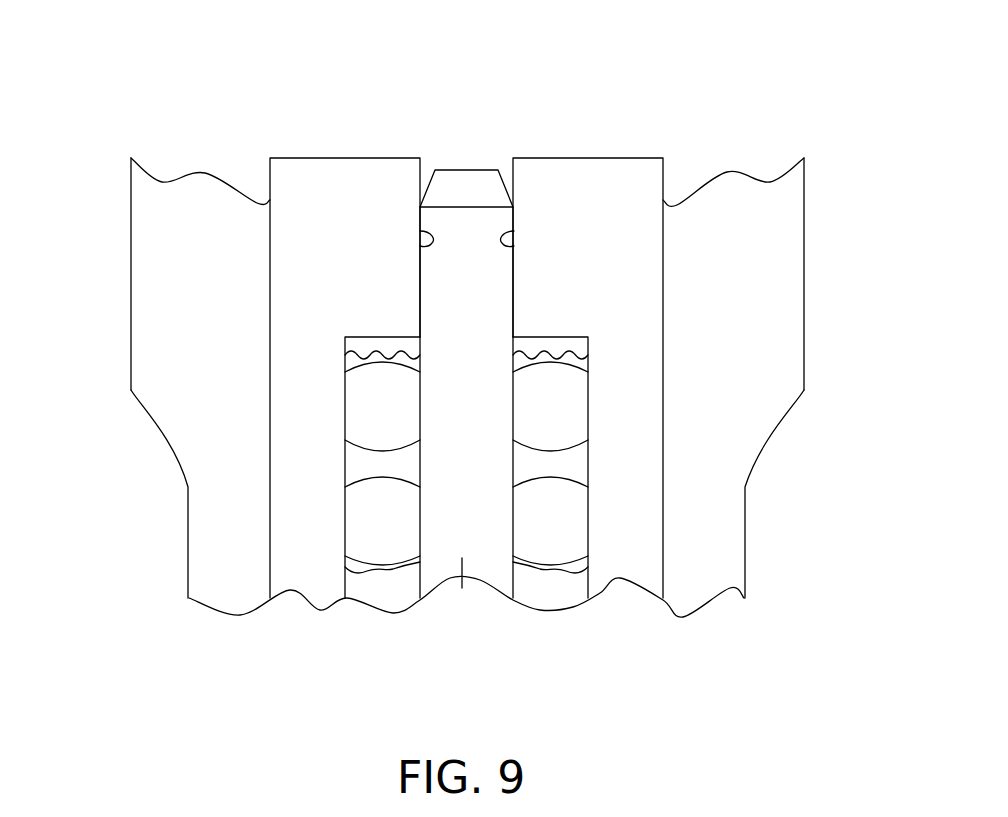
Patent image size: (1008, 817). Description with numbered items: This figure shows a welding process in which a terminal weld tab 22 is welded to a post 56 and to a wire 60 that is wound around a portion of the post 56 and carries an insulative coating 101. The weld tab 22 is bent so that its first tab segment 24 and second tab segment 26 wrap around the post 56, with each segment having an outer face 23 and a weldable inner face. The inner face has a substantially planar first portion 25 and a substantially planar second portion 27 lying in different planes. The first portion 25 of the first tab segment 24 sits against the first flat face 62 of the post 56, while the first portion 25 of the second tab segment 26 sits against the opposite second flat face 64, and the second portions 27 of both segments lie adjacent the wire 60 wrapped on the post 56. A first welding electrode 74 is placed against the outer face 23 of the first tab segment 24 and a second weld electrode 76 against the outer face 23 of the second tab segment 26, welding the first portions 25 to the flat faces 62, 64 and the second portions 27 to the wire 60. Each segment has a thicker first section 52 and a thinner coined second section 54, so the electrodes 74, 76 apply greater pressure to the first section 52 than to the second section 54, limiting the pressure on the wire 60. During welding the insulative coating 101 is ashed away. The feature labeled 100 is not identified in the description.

The terminal weld tab 22 is at (533, 156).
The first tab segment 24 is at (303, 142).
The second tab segment 26 is at (567, 156).
The first portion of the weld tab 52 is at (338, 198).
The outer face 23 is at (270, 255).
The substantially planar first portion 25 is at (420, 238).
The first flat face 62 is at (420, 262).
The second flat face 64 is at (513, 287).
The insulative coating 101 is at (345, 358).
The substantially planar second portion 27 is at (355, 462).
The first welding electrode 74 is at (207, 518).
The second weld electrode 76 is at (723, 505).
The second portion of the weld tab 54 is at (305, 535).
The wire 60 is at (380, 522).
The post 56 is at (462, 583).
The resilient member 100 is at (393, 570).